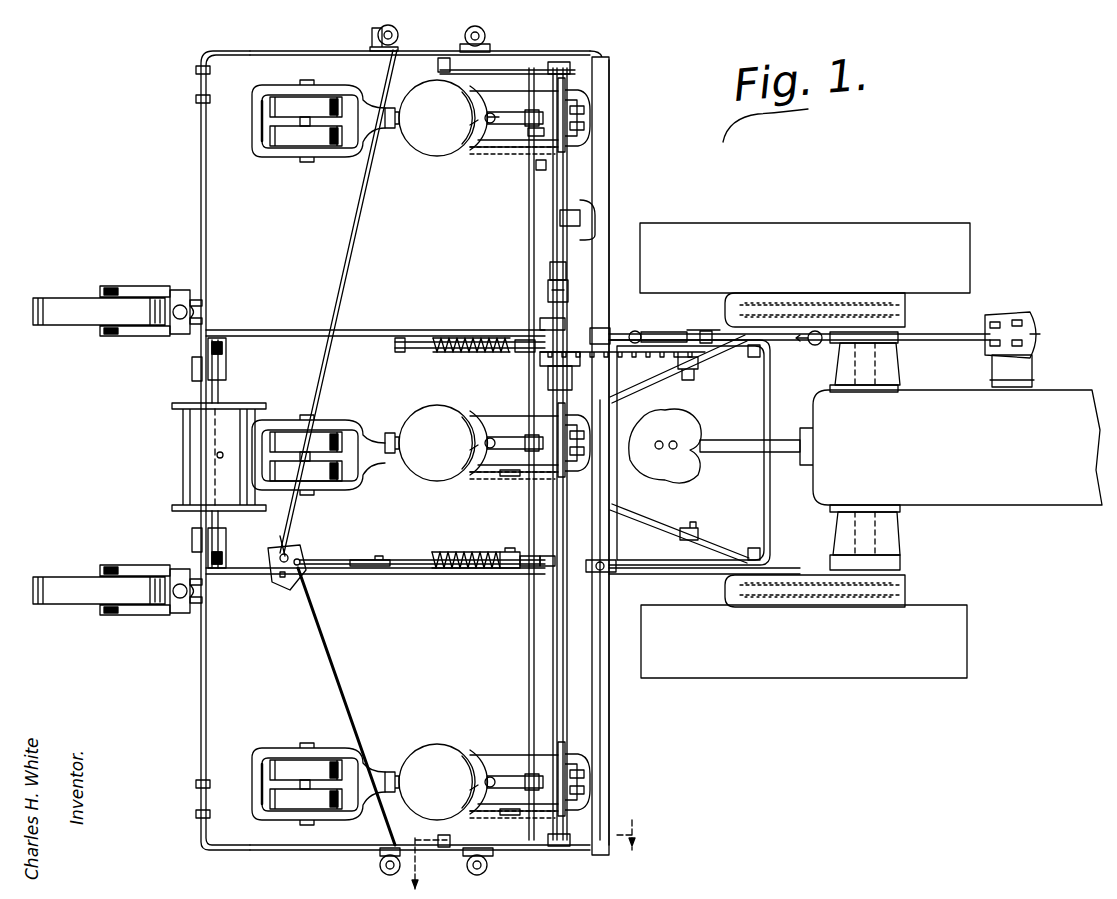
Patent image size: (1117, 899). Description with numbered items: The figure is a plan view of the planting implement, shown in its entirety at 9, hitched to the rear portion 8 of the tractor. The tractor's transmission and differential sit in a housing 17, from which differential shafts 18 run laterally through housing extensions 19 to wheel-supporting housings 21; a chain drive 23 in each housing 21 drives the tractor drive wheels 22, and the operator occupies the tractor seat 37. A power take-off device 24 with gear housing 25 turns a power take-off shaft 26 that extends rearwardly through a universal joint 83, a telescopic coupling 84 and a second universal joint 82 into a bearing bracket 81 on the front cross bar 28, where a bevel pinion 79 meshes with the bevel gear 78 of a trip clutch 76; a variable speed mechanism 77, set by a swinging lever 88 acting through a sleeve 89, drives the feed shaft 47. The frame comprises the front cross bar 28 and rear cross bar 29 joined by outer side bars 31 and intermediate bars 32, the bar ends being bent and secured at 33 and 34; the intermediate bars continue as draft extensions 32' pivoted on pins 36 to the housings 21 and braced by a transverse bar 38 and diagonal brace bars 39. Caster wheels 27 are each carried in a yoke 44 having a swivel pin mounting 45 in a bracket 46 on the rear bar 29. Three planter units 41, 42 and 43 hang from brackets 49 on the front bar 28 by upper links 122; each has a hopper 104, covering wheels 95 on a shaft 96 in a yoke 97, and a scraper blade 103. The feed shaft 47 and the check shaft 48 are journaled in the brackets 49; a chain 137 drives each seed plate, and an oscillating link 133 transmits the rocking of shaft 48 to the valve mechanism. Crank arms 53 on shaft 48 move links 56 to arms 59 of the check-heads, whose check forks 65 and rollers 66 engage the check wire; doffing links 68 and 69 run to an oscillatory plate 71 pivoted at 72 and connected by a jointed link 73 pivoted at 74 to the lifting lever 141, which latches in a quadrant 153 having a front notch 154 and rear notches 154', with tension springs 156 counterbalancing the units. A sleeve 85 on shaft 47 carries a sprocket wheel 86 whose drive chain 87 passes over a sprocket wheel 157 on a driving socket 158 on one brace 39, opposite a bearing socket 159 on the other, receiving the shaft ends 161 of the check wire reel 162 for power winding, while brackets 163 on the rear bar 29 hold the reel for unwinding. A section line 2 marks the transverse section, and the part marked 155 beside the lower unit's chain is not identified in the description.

The section line 2 is at (520, 856).
The rear portion of the tractor 8 is at (983, 299).
The planter attachment 9 is at (612, 85).
The housing 17 is at (1088, 506).
The differential shafts 18 is at (840, 370).
The housing extensions 19 is at (832, 382).
The wheel-supporting housings 21 is at (800, 300).
The tractor drive wheels 22 is at (784, 218).
The chain drive 23 is at (768, 300).
The power take-off device 24 is at (1040, 326).
The gear housing 25 is at (1036, 362).
The power take-off shaft 26 is at (650, 330).
The caster wheels 27 is at (33, 326).
The front cross bar 28 is at (609, 718).
The rear cross bar 29 is at (203, 680).
The outer side bars 31 is at (320, 50).
The intermediate bars 32 is at (375, 432).
The draft extensions 32' is at (704, 449).
The laterally bent rear ends 33 is at (210, 100).
The inwardly bent front ends 34 is at (602, 56).
The pivot pins 36 is at (755, 348).
The tractor seat 37 is at (708, 460).
The transverse bar 38 is at (702, 438).
The diagonal brace bars 39 is at (640, 385).
The planter unit 41 is at (400, 152).
The planter unit 42 is at (393, 415).
The planter unit 43 is at (397, 752).
The yoke 44 is at (178, 290).
The swivel pin mounting 45 is at (180, 304).
The bracket 46 is at (203, 308).
The feed shaft 47 is at (560, 170).
The check shaft 48 is at (548, 195).
The brackets 49 is at (590, 128).
The crank arms 53 is at (560, 62).
The links 56 is at (500, 70).
The arm 59 is at (438, 64).
The check fork 65 is at (398, 38).
The rollers 66 is at (485, 34).
The doffing link 68 is at (346, 240).
The doffing link 69 is at (335, 672).
The oscillatory plate 71 is at (286, 590).
The pivot 72 is at (290, 548).
The jointed link 73 is at (350, 575).
The pivotal connection 74 is at (505, 570).
The trip clutch 76 is at (540, 318).
The variable speed mechanism 77 is at (548, 290).
The bevel gear 78 is at (530, 322).
The bevel pinion 79 is at (548, 380).
The bearing bracket 81 is at (603, 328).
The universal joint 82 is at (638, 331).
The second universal joint 83 is at (812, 344).
The telescopic coupling 84 is at (680, 330).
The sleeve 85 is at (520, 352).
The sprocket wheel 86 is at (545, 366).
The drive chain 87 is at (645, 358).
The swinging lever 88 is at (585, 220).
The sleeve 89 is at (550, 270).
The covering wheels 95 is at (318, 112).
The shaft 96 is at (300, 120).
The yoke 97 is at (352, 130).
The scraper blade 103 is at (262, 120).
The seed hopper 104 is at (450, 150).
The upper link 122 is at (470, 98).
The oscillating link 133 is at (495, 475).
The chain 137 is at (510, 160).
The lifting lever 141 is at (422, 568).
The latching quadrant 153 is at (545, 578).
The notch 154 is at (619, 578).
The notches 154' is at (510, 583).
The guide 155 is at (501, 642).
The tension springs 156 is at (445, 552).
The sprocket wheel 157 is at (695, 372).
The driving socket 158 is at (535, 165).
The bearing socket 159 is at (698, 530).
The shaft ends 161 is at (220, 398).
The check wire reel 162 is at (183, 452).
The bearing brackets 163 is at (192, 368).